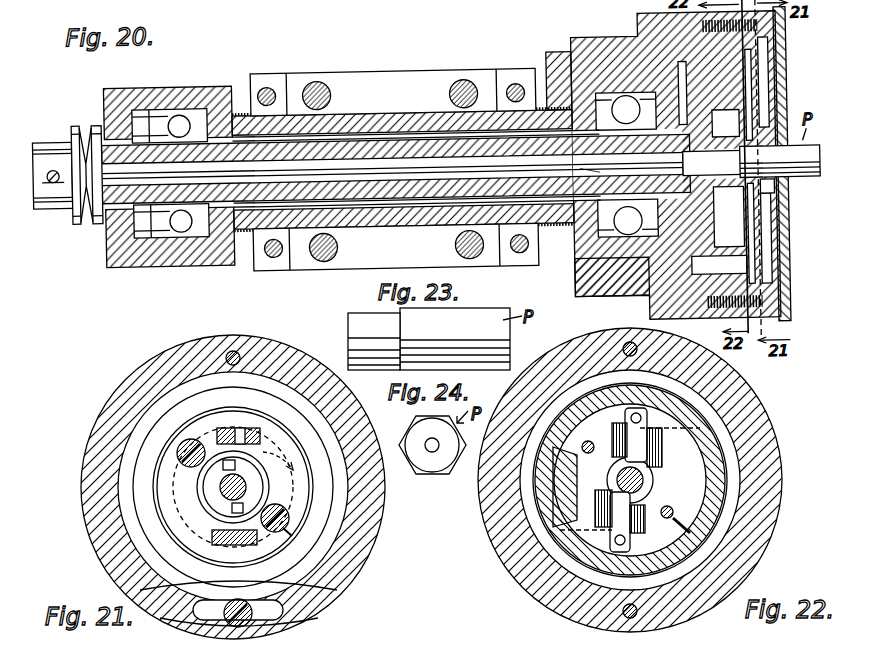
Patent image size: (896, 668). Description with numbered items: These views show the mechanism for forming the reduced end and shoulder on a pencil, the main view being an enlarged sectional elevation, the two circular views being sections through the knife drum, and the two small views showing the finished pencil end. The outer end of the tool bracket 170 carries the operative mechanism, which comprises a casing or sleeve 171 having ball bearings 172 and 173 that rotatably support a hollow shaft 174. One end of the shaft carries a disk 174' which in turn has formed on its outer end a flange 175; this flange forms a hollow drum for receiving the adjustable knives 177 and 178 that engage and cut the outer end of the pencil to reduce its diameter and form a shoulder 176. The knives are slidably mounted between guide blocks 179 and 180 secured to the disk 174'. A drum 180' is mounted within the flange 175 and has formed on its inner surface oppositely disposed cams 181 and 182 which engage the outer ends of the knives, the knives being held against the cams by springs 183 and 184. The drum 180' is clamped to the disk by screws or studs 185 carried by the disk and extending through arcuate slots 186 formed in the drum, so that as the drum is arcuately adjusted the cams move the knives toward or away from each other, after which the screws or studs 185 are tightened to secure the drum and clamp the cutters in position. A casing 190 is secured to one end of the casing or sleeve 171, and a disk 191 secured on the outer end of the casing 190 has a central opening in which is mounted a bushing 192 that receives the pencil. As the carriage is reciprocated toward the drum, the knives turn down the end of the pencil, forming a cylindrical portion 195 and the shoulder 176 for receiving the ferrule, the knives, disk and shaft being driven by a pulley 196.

In FIG. 20, the tool bracket 170 is at (421, 70).
In FIG. 20, the casing or sleeve 171 is at (342, 124).
In FIG. 20, the ball bearing 172 is at (183, 258).
In FIG. 20, the ball bearing 173 is at (558, 80).
In FIG. 20, the hollow shaft 174 is at (396, 143).
In FIG. 22, the disk 174' is at (551, 522).
In FIG. 20, the flange 175 is at (670, 293).
In FIG. 21, the flange 175 is at (153, 533).
In FIG. 22, the flange 175 is at (548, 584).
In FIG. 20, the shoulder 176 is at (750, 164).
In FIG. 23, the shoulder 176 is at (403, 318).
In FIG. 24, the shoulder 176 is at (420, 424).
In FIG. 20, the knife 177 is at (752, 102).
In FIG. 21, the knife 177 is at (255, 425).
In FIG. 22, the knife 177 is at (624, 436).
In FIG. 21, the knife 178 is at (222, 518).
In FIG. 22, the knife 178 is at (643, 483).
In FIG. 21, the guide block 179 is at (233, 440).
In FIG. 22, the guide block 179 is at (612, 499).
In FIG. 20, the guide block 180 is at (785, 163).
In FIG. 21, the guide block 180 is at (265, 546).
In FIG. 22, the guide block 180 is at (685, 472).
In FIG. 20, the drum 180' is at (760, 249).
In FIG. 21, the drum 180' is at (338, 584).
In FIG. 22, the drum 180' is at (507, 498).
In FIG. 21, the cam 181 is at (173, 502).
In FIG. 22, the cam 181 is at (603, 452).
In FIG. 21, the cam 182 is at (278, 455).
In FIG. 22, the cam 182 is at (667, 454).
In FIG. 20, the spring 183 is at (594, 162).
In FIG. 22, the spring 183 is at (690, 400).
In FIG. 22, the spring 184 is at (549, 609).
In FIG. 21, the screw or stud 185 is at (187, 447).
In FIG. 22, the screw or stud 185 is at (583, 449).
In FIG. 20, the arcuate slot 186 is at (770, 50).
In FIG. 21, the arcuate slot 186 is at (203, 427).
In FIG. 20, the casing 190 is at (657, 27).
In FIG. 22, the casing 190 is at (767, 443).
In FIG. 20, the disk 191 is at (688, 74).
In FIG. 20, the bushing 192 is at (742, 124).
In FIG. 20, the cylindrical portion 195 is at (774, 193).
In FIG. 23, the cylindrical portion 195 is at (360, 327).
In FIG. 24, the cylindrical portion 195 is at (418, 468).
In FIG. 21, the cylindrical portion 195 is at (248, 487).
In FIG. 22, the cylindrical portion 195 is at (646, 480).
In FIG. 20, the pulley 196 is at (78, 219).